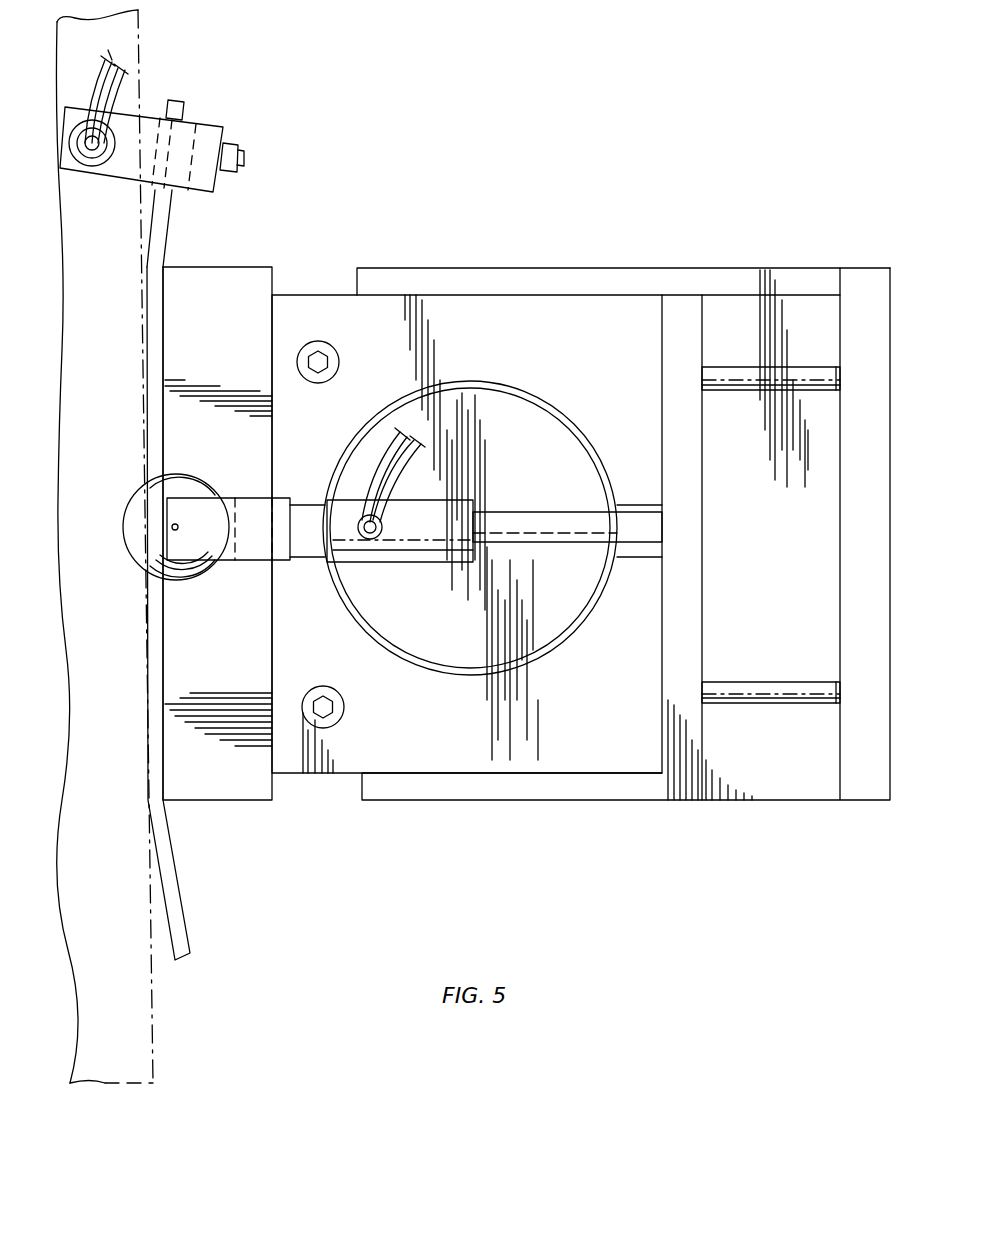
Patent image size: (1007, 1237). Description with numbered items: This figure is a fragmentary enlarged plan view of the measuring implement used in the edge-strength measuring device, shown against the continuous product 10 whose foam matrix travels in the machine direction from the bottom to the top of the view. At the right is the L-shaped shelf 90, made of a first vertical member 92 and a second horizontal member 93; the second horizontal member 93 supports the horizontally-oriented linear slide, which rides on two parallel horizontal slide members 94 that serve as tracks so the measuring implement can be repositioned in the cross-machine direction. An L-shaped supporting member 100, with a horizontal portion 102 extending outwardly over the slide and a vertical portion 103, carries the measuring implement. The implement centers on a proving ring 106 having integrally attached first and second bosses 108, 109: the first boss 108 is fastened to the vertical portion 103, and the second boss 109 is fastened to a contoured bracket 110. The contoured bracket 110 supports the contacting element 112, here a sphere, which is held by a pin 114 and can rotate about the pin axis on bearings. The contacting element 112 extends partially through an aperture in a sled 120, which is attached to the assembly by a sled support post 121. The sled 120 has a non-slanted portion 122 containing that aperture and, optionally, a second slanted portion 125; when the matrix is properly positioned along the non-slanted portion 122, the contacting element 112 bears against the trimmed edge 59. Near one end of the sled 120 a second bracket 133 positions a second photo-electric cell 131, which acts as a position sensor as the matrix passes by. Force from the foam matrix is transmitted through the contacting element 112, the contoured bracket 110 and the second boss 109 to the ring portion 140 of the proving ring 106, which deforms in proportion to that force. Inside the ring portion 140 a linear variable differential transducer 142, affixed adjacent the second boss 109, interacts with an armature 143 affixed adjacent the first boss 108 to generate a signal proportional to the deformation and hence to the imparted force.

The continuous product 10 is at (162, 1069).
The trimmed edge 59 is at (153, 968).
The L-shaped shelf 90 is at (623, 519).
The first vertical member 92 is at (862, 280).
The second horizontal member 93 is at (715, 285).
The horizontal slide members 94 is at (752, 390).
The L-shaped supporting member 100 is at (512, 589).
The horizontal portion 102 is at (607, 763).
The vertical portion 103 is at (687, 757).
The proving ring 106 is at (492, 536).
The first boss 108 is at (648, 545).
The second boss 109 is at (315, 548).
The contoured bracket 110 is at (253, 510).
The contacting element 112 is at (130, 527).
The pin 114 is at (178, 530).
The sled 120 is at (182, 575).
The sled support post 121 is at (242, 778).
The non-slanted portion 122 is at (157, 748).
The second slanted portion 125 is at (158, 225).
The second photo-electric cell 131 is at (118, 140).
The second bracket 133 is at (207, 145).
The ring portion 140 is at (440, 672).
The linear variable differential transducer 142 is at (433, 548).
The armature 143 is at (557, 525).